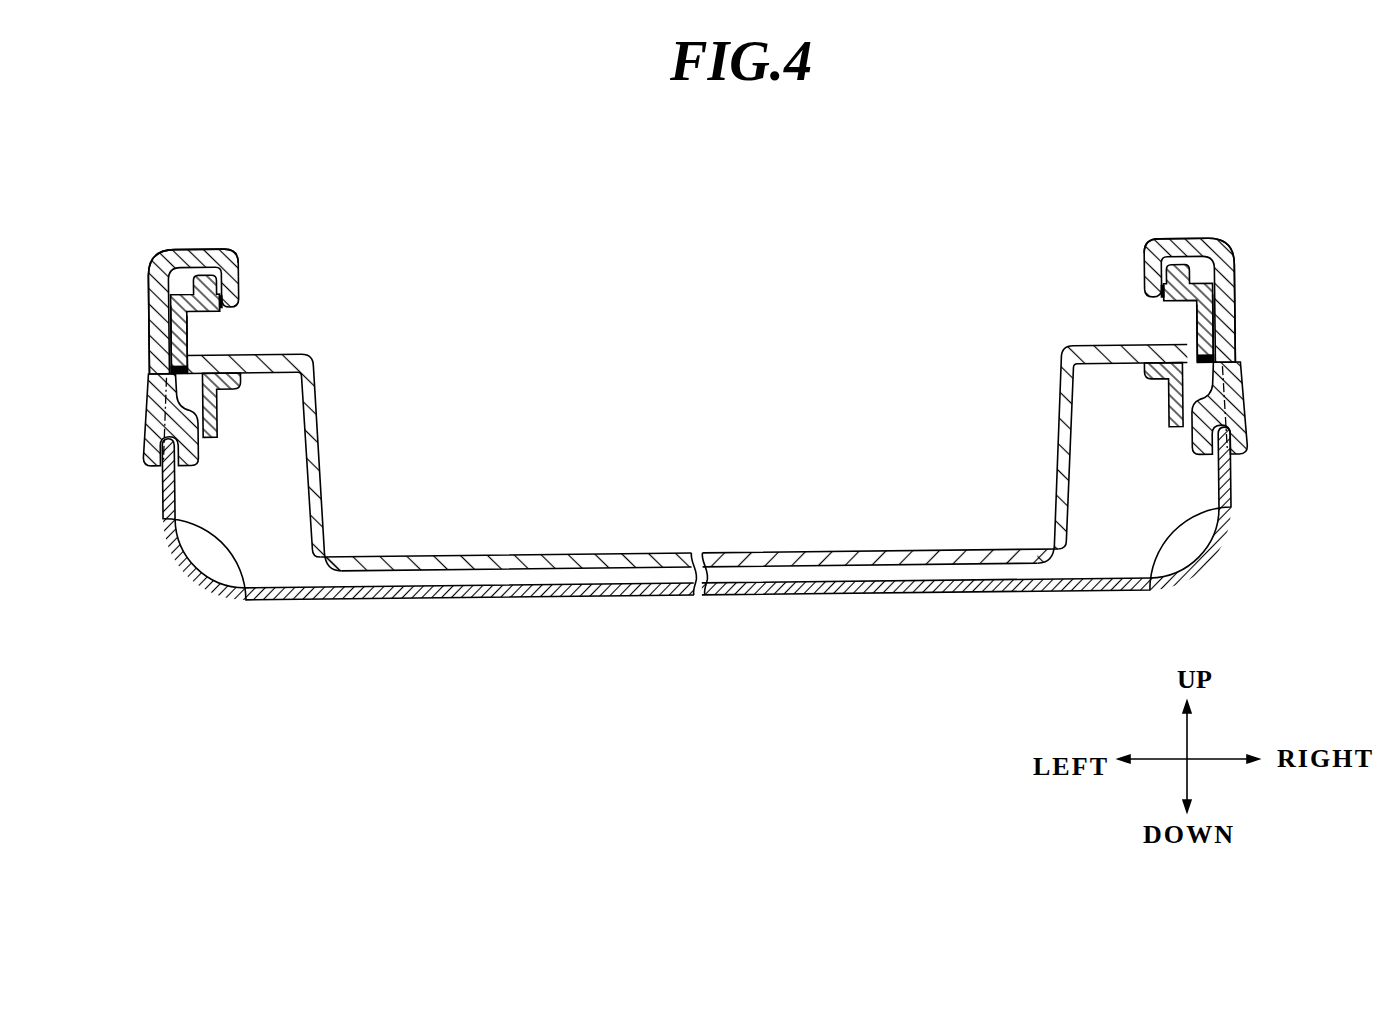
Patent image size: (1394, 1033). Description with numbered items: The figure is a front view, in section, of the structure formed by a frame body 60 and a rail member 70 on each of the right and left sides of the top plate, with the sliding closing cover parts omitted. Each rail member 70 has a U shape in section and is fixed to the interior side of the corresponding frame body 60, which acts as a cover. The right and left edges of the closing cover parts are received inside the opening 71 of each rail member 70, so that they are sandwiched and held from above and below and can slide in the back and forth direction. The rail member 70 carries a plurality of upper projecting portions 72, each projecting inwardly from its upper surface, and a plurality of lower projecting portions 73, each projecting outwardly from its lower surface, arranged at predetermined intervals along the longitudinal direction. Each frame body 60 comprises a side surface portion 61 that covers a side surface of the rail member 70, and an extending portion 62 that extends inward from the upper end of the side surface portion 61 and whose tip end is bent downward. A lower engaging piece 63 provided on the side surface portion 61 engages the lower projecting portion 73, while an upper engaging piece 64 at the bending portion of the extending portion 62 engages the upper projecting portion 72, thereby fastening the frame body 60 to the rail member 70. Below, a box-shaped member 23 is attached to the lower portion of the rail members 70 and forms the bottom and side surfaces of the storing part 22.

The storing part 22 is at (603, 477).
The box-shaped member 23 is at (498, 563).
The frame body 60 is at (164, 259).
The side surface portion 61 is at (148, 397).
The extending portion 62 is at (231, 256).
The lower engaging piece 63 is at (140, 403).
The upper engaging piece 64 is at (227, 303).
The rail member 70 is at (168, 331).
The opening 71 is at (212, 330).
The upper projecting portion 72 is at (207, 272).
The lower projecting portion 73 is at (168, 372).